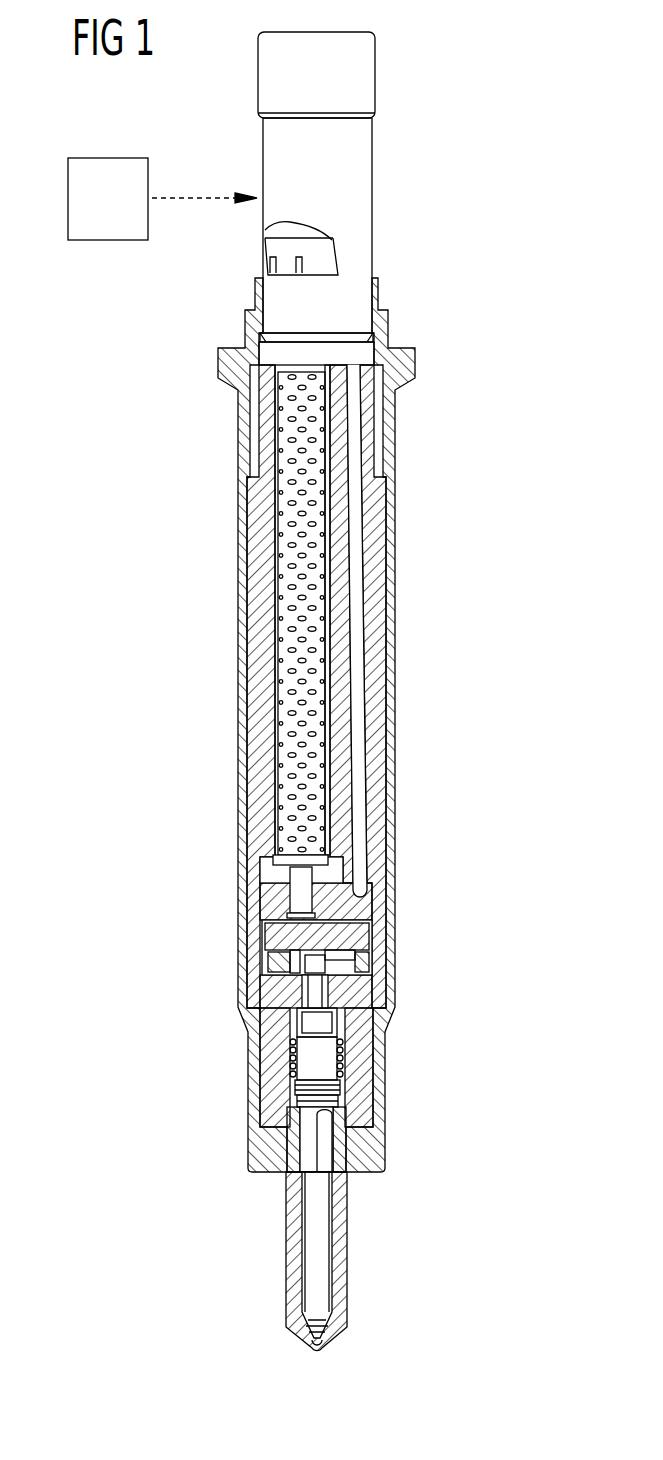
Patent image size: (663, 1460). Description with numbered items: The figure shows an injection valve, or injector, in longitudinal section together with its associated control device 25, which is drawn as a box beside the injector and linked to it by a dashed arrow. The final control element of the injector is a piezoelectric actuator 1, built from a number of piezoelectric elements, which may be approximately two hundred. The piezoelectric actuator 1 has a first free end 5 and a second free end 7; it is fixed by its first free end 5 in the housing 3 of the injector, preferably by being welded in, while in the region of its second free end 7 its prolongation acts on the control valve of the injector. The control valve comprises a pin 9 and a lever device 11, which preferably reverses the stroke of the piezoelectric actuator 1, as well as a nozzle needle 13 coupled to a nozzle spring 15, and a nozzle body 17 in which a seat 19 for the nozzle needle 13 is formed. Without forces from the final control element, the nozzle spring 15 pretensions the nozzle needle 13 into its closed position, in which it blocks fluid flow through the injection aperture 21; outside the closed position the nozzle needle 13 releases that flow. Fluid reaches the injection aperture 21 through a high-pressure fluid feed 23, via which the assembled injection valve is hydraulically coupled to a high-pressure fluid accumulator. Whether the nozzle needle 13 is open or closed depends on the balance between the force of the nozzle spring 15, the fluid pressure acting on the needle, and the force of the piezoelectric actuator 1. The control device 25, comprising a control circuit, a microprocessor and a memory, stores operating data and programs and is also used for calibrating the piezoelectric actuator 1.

The piezoelectric actuator 1 is at (295, 667).
The housing 3 is at (375, 556).
The first free end 5 is at (343, 373).
The second free end 7 is at (323, 860).
The pin 9 is at (300, 898).
The lever device 11 is at (412, 945).
The nozzle needle 13 is at (322, 1025).
The nozzle spring 15 is at (347, 1065).
The nozzle body 17 is at (338, 1250).
The seat 19 is at (330, 1340).
The injection aperture 21 is at (310, 1340).
The high-pressure fluid feed 23 is at (353, 603).
The control device 25 is at (108, 243).